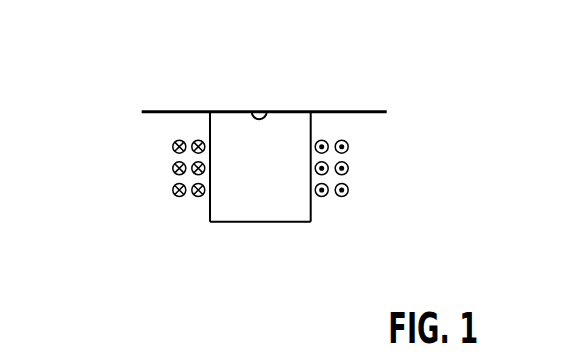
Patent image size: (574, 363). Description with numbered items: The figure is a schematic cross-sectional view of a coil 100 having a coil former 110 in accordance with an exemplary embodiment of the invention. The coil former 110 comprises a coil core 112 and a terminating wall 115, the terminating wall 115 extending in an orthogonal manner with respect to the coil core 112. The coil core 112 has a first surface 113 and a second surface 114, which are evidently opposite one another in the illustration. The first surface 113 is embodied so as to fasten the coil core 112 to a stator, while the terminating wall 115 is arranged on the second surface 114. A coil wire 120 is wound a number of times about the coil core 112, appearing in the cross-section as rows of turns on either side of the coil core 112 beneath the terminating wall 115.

The coil 100 is at (178, 95).
The coil former 110 is at (219, 226).
The coil core 112 is at (295, 214).
The first surface 113 is at (247, 224).
The second surface 114 is at (252, 110).
The terminating wall 115 is at (323, 111).
The coil wire 120 is at (172, 169).